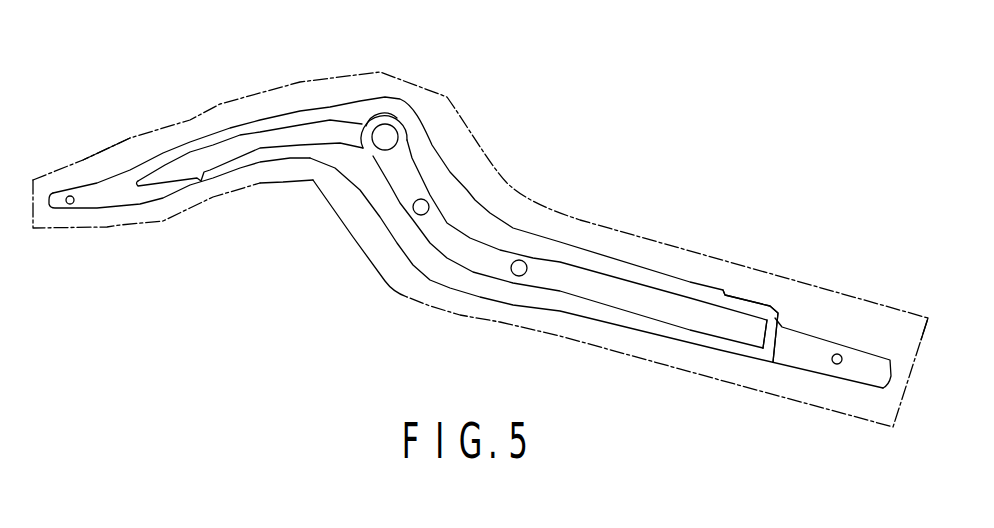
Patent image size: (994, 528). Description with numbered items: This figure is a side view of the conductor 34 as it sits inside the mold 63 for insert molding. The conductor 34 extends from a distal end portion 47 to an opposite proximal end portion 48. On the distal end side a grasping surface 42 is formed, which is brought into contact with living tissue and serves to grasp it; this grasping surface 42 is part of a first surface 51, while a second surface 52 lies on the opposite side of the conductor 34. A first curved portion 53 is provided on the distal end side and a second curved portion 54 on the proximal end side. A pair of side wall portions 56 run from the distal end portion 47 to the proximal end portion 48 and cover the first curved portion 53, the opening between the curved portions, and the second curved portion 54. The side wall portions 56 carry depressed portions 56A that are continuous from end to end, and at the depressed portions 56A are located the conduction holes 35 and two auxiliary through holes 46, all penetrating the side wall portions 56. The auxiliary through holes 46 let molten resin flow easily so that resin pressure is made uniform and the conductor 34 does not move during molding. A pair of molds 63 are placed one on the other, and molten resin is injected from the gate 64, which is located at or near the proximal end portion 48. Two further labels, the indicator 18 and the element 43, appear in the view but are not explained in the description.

The pedal arm assembly 18 is at (573, 152).
The conductor 34 is at (402, 97).
The conduction holes 35 is at (398, 128).
The grasping surface 42 is at (98, 208).
The upper edge 43 is at (97, 183).
The auxiliary through holes 46 is at (421, 215).
The distal end portion 47 is at (52, 207).
The proximal end portion 48 is at (889, 382).
The first surface 51 is at (310, 160).
The second surface 52 is at (332, 109).
The first curved portion 53 is at (289, 112).
The second curved portion 54 is at (533, 306).
The side wall portions 56 is at (452, 186).
The depressed portions 56A is at (678, 307).
The mold 63 is at (617, 228).
The gate 64 is at (922, 351).